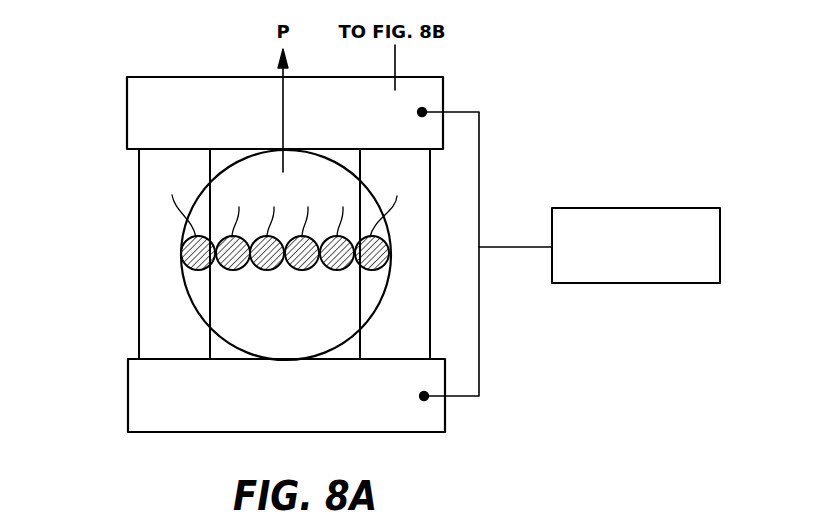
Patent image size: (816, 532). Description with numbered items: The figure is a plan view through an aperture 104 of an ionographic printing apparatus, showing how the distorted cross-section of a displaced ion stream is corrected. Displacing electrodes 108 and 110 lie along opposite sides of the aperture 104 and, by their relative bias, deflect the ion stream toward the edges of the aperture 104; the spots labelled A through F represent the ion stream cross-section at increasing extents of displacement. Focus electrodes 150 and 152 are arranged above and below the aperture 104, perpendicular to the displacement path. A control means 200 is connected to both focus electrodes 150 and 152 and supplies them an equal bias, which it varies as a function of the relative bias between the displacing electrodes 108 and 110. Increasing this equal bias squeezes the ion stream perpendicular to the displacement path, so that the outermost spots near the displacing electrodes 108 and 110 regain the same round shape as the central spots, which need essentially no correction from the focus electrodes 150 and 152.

The focus electrode 150 is at (165, 77).
The focus electrode 152 is at (168, 433).
The displacing electrode 108 is at (150, 240).
The displacing electrode 110 is at (420, 202).
The aperture 104 is at (233, 346).
The control means 200 is at (620, 284).